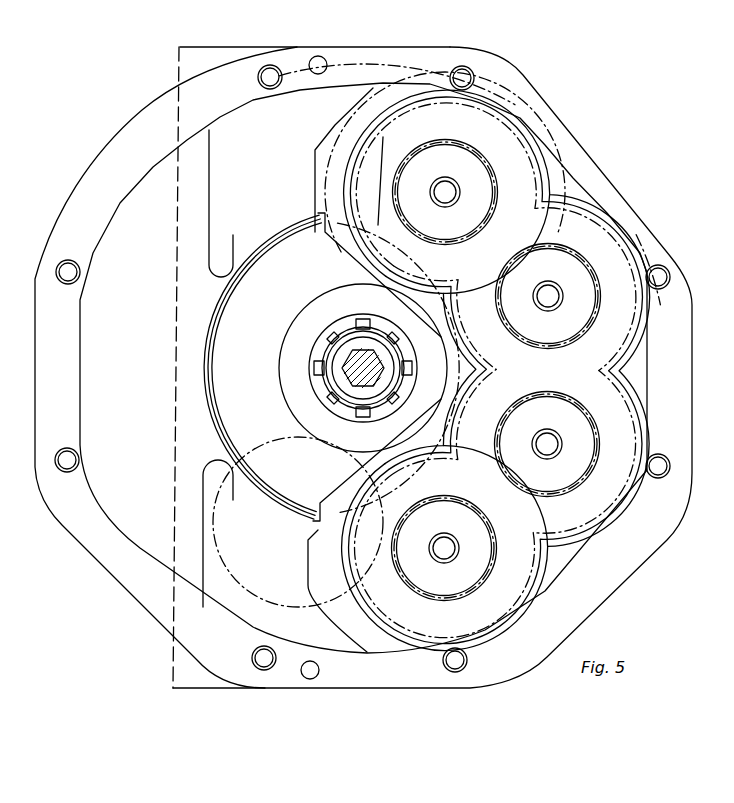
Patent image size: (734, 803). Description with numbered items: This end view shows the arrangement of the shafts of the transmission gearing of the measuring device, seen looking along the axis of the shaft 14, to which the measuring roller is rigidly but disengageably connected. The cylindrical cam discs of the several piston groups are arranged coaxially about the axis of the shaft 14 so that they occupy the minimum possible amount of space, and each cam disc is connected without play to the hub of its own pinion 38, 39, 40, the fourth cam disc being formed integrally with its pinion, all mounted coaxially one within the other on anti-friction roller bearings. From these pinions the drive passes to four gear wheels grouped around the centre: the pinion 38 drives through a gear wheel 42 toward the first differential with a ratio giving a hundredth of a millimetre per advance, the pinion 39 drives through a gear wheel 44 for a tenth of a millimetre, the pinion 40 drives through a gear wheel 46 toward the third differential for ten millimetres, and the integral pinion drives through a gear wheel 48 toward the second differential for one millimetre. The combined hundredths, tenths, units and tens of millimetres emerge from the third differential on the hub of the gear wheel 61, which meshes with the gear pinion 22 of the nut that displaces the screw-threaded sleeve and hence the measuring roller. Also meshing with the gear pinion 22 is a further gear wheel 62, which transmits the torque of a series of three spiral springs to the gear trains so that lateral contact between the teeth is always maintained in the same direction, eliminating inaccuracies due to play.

The shaft 14 is at (352, 356).
The gear pinion 22 is at (288, 336).
The pinion 38 is at (383, 137).
The pinion 39 is at (495, 370).
The pinion 40 is at (445, 162).
The gear wheel 42 is at (496, 176).
The gear wheel 44 is at (492, 567).
The gear wheel 46 is at (598, 447).
The gear wheel 48 is at (597, 276).
The gear wheel 61 is at (560, 183).
The gear wheel 62 is at (268, 442).